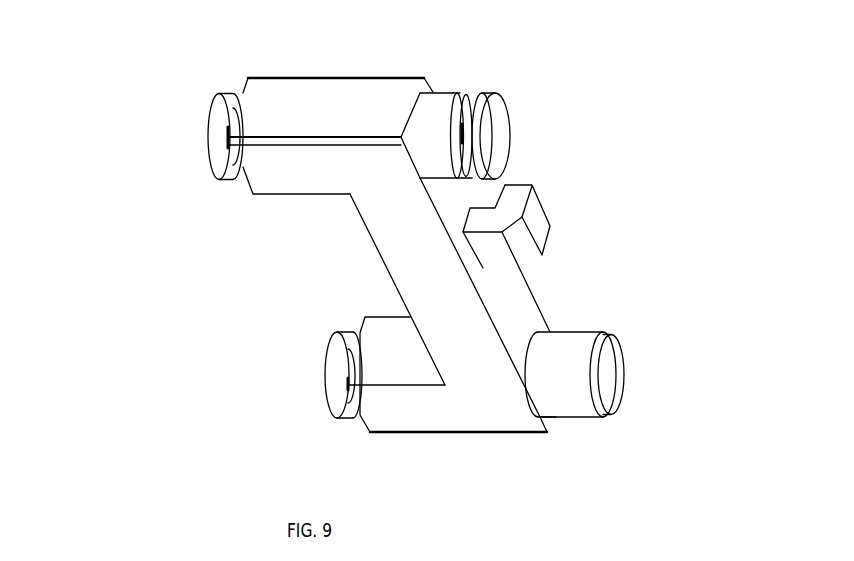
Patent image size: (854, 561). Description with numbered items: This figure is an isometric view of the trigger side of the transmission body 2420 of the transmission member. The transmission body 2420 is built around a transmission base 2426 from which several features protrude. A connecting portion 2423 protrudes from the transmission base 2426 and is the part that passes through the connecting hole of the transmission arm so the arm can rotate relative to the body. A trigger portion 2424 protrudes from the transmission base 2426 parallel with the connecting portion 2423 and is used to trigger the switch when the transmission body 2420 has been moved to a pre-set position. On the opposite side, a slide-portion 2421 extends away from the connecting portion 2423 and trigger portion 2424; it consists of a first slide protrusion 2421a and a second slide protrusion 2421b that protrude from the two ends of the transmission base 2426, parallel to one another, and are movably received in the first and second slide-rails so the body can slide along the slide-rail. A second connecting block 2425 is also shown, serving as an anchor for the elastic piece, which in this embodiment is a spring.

The transmission body 2420 is at (467, 410).
The slide-portion 2421 is at (191, 256).
The first slide protrusion 2421a is at (216, 178).
The second slide protrusion 2421b is at (343, 372).
The connecting portion 2423 is at (491, 125).
The trigger portion 2424 is at (620, 380).
The second connecting block 2425 is at (525, 215).
The transmission base 2426 is at (323, 103).